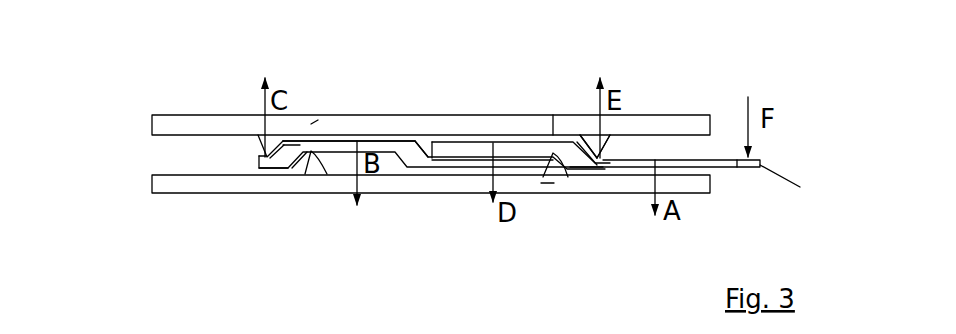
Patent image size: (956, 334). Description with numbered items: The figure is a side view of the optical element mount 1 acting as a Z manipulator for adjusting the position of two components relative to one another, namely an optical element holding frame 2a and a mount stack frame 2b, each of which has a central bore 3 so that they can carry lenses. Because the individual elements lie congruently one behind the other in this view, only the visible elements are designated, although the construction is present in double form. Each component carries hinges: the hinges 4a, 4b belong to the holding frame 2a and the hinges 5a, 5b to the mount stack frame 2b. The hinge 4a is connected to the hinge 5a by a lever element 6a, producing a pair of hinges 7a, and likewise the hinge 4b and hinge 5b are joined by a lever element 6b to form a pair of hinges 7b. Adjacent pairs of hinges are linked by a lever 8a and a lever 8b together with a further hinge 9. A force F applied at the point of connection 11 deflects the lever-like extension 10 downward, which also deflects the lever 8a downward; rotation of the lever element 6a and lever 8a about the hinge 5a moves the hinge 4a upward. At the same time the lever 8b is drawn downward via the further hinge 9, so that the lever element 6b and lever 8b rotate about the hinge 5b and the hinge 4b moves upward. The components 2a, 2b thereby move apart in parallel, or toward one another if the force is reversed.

The optical element mount 1 is at (128, 63).
The optical element holding frame 2a is at (163, 122).
The mount stack frame 2b is at (165, 185).
The central bore 3 is at (311, 124).
The hinge 4a is at (264, 153).
The hinge 4b is at (601, 138).
The hinge 5a is at (306, 170).
The hinge 5b is at (556, 168).
The lever element 6a is at (283, 162).
The lever element 6b is at (582, 150).
The pair of hinges 7a is at (247, 158).
The pair of hinges 7b is at (598, 179).
The lever 8a is at (377, 145).
The lever 8b is at (467, 143).
The further hinge 9 is at (434, 152).
The lever-like extension 10 is at (667, 163).
The point of connection 11 is at (800, 187).